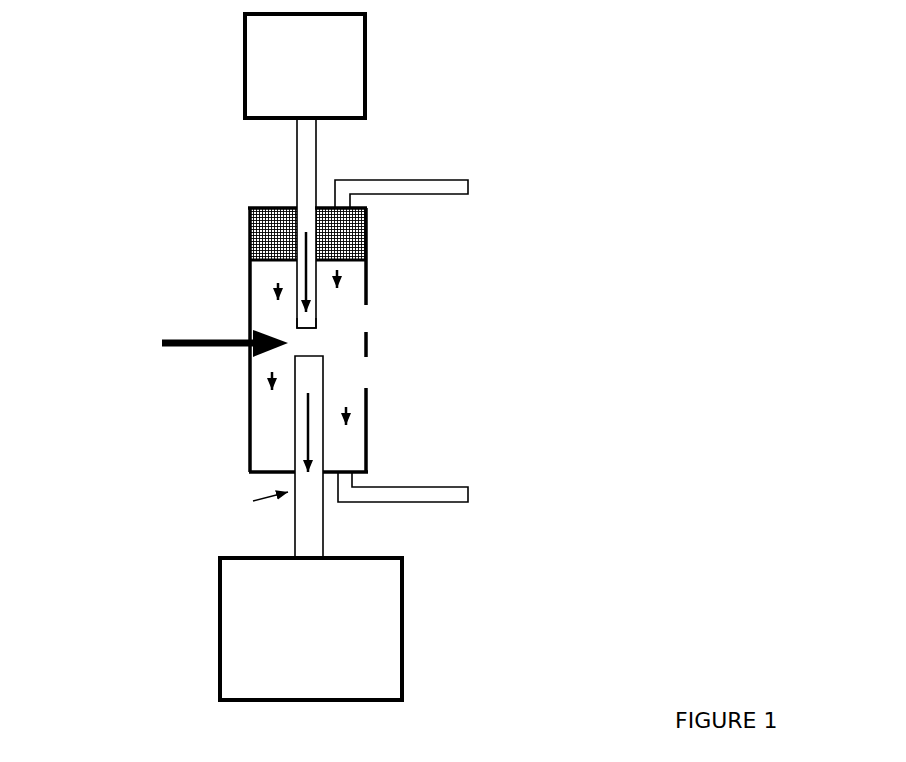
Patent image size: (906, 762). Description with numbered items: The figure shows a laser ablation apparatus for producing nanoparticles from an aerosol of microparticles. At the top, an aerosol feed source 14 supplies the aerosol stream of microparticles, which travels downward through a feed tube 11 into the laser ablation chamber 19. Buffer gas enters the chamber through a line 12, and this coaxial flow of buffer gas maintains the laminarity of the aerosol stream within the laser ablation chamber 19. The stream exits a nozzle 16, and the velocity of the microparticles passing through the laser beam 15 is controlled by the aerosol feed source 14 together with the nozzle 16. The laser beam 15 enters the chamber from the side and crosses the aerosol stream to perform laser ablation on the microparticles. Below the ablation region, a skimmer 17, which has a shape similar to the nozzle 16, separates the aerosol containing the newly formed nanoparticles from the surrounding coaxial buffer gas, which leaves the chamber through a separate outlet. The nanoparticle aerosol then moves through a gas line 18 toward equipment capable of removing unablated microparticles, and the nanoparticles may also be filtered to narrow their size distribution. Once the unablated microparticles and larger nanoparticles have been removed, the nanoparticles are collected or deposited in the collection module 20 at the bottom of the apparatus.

The aerosol feed tube 11 is at (318, 159).
The line 12 is at (478, 188).
The aerosol feed source 14 is at (357, 50).
The laser beam 15 is at (153, 338).
The nozzle 16 is at (322, 308).
The skimmer 17 is at (329, 387).
The gas line 18 is at (290, 525).
The laser ablation chamber 19 is at (257, 437).
The collection module 20 is at (388, 589).